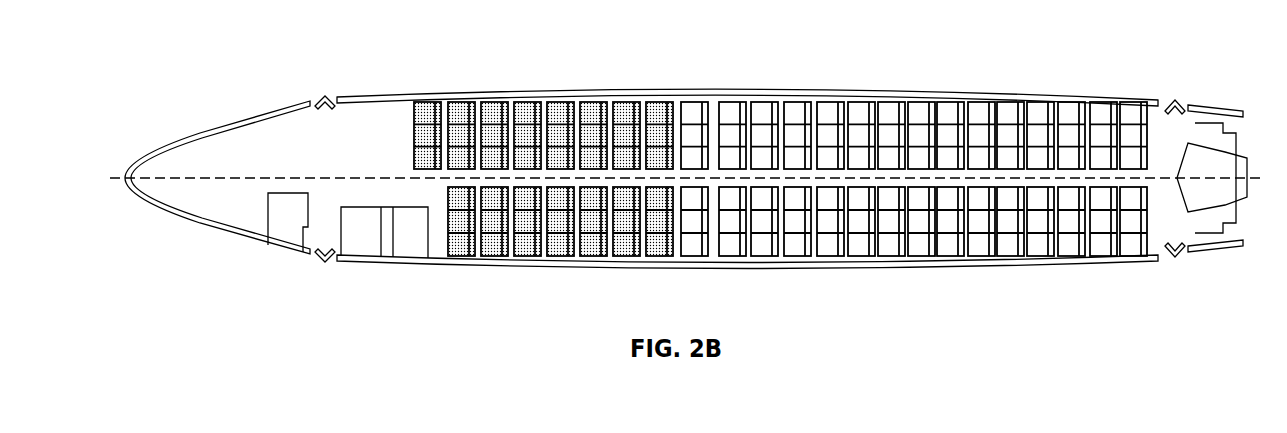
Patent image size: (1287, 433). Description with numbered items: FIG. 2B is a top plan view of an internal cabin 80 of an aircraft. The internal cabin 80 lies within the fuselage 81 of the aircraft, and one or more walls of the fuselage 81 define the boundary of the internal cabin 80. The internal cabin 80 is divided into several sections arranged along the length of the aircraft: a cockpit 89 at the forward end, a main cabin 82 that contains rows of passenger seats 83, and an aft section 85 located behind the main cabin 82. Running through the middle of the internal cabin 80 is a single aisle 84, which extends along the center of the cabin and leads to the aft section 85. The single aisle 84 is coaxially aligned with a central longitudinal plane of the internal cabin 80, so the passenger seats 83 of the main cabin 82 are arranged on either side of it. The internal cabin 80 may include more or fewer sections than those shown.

The internal cabin 80 is at (341, 47).
The fuselage 81 is at (515, 92).
The main cabin 82 is at (461, 118).
The passenger seats 83 is at (691, 120).
The single aisle 84 is at (797, 172).
The aft section 85 is at (1162, 120).
The cockpit 89 is at (233, 140).